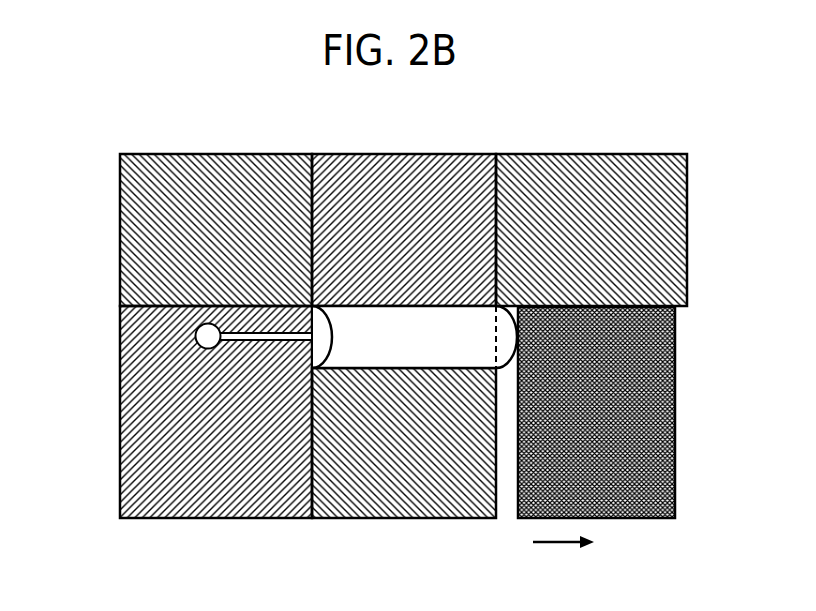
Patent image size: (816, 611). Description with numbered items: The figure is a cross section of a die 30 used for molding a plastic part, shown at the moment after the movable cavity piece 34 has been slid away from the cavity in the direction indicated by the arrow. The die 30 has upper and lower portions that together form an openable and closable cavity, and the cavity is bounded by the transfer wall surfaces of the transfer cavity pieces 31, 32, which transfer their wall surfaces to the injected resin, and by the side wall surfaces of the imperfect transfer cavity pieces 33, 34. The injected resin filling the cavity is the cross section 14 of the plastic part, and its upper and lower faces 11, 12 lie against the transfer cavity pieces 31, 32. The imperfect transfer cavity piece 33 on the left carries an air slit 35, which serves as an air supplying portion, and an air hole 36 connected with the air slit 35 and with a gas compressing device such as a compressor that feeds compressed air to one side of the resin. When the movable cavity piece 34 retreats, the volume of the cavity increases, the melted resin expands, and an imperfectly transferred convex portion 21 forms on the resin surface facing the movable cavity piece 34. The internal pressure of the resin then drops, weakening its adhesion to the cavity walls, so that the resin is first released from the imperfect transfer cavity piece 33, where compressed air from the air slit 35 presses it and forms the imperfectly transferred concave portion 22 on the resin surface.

The die 30 is at (661, 121).
The transfer cavity piece 31 is at (355, 160).
The transfer cavity piece 32 is at (355, 508).
The imperfect transfer cavity piece 33 is at (146, 442).
The movable cavity piece 34 is at (616, 508).
The air slit 35 is at (247, 345).
The air hole 36 is at (196, 333).
The upper cavity surface 11 is at (434, 306).
The lower cavity surface 12 is at (433, 369).
The cross section of the plastic part 14 is at (479, 337).
The imperfectly transferred convex portion 21 is at (499, 365).
The imperfectly transferred concave portion 22 is at (333, 337).